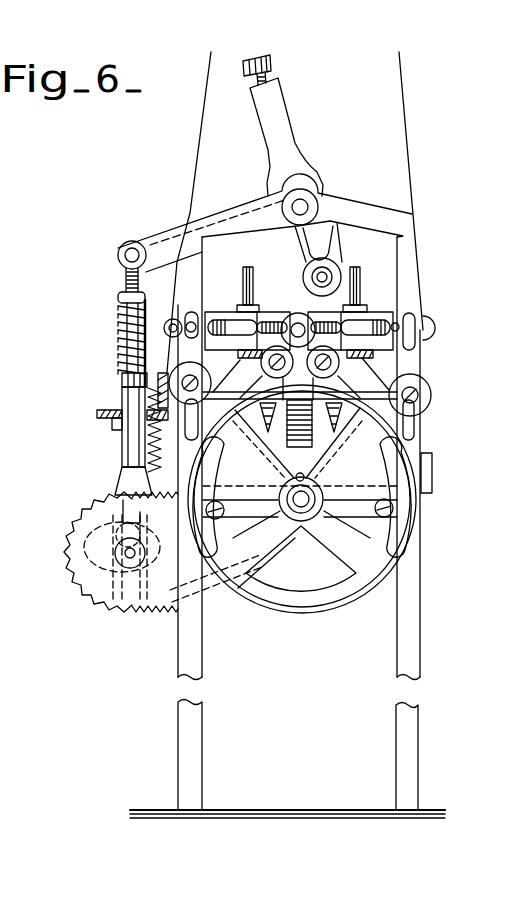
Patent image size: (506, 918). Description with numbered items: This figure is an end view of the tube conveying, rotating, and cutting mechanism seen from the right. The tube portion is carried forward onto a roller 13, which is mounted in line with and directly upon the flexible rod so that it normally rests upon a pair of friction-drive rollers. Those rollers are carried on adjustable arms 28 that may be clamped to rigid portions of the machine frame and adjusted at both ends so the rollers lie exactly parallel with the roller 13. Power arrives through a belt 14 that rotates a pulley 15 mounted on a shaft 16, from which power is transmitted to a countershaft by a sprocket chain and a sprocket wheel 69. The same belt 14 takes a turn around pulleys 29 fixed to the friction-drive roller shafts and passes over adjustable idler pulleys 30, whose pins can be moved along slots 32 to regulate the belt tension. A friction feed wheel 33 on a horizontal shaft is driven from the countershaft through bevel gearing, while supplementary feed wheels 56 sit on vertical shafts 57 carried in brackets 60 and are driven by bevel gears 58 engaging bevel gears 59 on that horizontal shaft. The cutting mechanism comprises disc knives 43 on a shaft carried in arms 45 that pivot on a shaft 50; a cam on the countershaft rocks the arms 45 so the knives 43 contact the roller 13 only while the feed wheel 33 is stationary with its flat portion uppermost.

The roller 13 is at (297, 318).
The belt 14 is at (411, 188).
The pulley 15 is at (372, 575).
The shaft 16 is at (297, 505).
The adjustable arms 28 is at (378, 465).
The pulleys 29 is at (351, 357).
The idler pulleys 30 is at (423, 385).
The slots 32 is at (411, 428).
The friction feed wheel 33 is at (301, 473).
The disc knives 43 is at (338, 270).
The arms 45 is at (287, 133).
The shaft 50 is at (304, 203).
The supplementary feed wheels 56 is at (270, 321).
The vertical shafts 57 is at (244, 276).
The bevel gears 58 is at (181, 362).
The bevel gears 59 is at (296, 430).
The brackets 60 is at (383, 313).
The sprocket wheel 69 is at (318, 530).